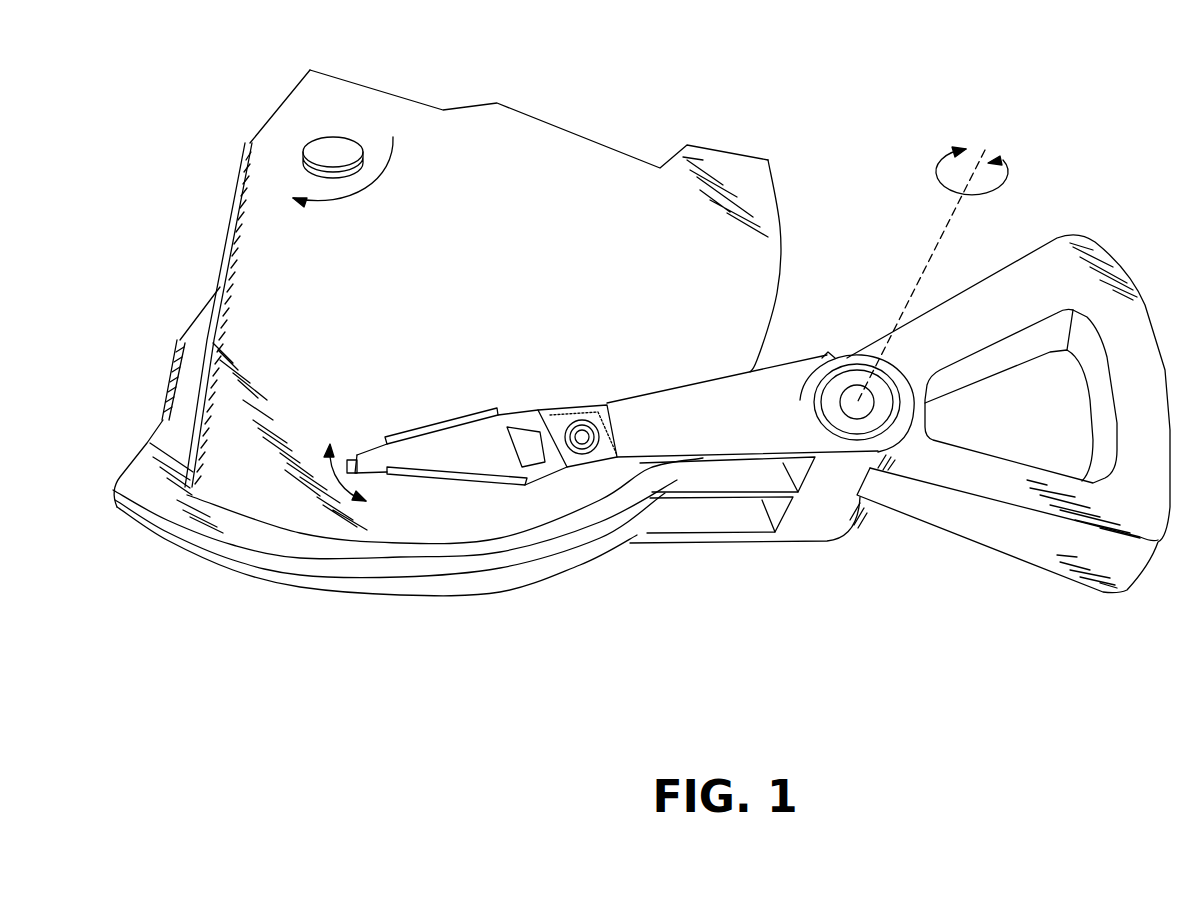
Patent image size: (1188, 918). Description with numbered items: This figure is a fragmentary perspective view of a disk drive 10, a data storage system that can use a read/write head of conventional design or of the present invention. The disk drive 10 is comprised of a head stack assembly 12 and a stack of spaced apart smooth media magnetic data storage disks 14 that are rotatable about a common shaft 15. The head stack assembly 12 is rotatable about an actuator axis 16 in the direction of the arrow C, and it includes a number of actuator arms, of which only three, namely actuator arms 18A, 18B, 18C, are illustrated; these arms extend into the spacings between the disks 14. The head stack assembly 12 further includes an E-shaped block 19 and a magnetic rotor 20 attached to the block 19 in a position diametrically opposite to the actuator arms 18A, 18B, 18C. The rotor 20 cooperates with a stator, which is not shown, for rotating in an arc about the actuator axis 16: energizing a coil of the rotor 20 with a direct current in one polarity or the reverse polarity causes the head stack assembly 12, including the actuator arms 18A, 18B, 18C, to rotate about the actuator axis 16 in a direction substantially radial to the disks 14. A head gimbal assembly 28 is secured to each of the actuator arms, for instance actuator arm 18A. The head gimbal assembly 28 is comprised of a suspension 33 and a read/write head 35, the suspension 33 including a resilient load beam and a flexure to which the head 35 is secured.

The disk drive 10 is at (600, 30).
The head stack assembly 12 is at (822, 575).
The smooth media magnetic data storage disks 14 is at (527, 203).
The common shaft 15 is at (317, 147).
The actuator axis 16 is at (950, 218).
The actuator arm 18A is at (740, 374).
The actuator arm 18B is at (707, 490).
The actuator arm 18C is at (740, 533).
The E-shaped block 19 is at (830, 523).
The magnetic rotor 20 is at (998, 540).
The head gimbal assembly 28 is at (451, 403).
The suspension 33 is at (483, 467).
The read/write head 35 is at (350, 475).